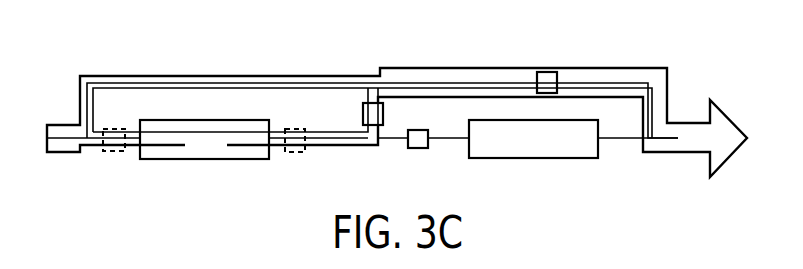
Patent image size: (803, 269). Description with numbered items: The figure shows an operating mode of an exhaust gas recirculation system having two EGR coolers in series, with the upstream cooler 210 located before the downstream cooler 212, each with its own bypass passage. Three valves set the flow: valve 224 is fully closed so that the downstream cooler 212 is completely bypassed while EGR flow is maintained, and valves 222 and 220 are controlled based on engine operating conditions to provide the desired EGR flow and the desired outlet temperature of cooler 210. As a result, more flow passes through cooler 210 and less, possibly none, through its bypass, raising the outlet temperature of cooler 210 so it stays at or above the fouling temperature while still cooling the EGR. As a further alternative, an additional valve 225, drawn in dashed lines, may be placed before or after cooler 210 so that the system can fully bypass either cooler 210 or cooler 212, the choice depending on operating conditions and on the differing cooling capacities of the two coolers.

The upstream EGR cooler 210 is at (221, 152).
The downstream EGR cooler 212 is at (549, 152).
The valve 220 is at (548, 72).
The valve 222 is at (368, 103).
The valve 224 is at (419, 149).
The additional valve 225 is at (112, 152).